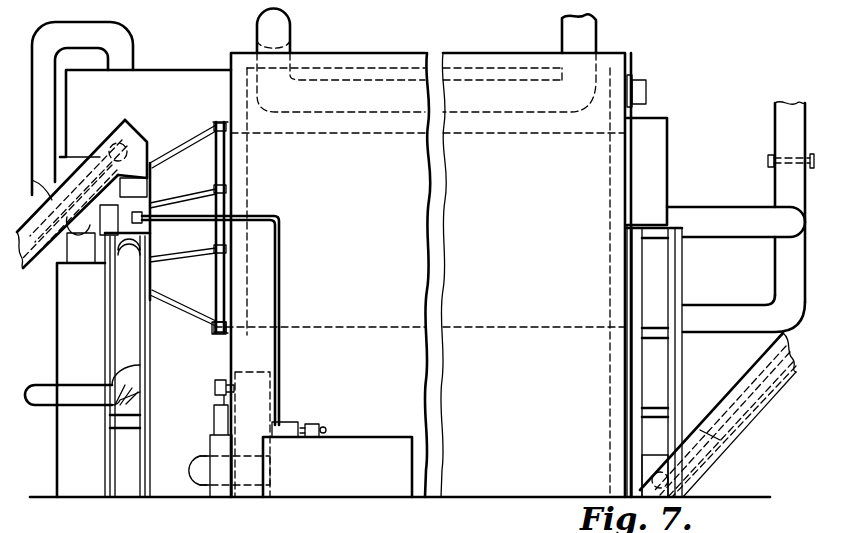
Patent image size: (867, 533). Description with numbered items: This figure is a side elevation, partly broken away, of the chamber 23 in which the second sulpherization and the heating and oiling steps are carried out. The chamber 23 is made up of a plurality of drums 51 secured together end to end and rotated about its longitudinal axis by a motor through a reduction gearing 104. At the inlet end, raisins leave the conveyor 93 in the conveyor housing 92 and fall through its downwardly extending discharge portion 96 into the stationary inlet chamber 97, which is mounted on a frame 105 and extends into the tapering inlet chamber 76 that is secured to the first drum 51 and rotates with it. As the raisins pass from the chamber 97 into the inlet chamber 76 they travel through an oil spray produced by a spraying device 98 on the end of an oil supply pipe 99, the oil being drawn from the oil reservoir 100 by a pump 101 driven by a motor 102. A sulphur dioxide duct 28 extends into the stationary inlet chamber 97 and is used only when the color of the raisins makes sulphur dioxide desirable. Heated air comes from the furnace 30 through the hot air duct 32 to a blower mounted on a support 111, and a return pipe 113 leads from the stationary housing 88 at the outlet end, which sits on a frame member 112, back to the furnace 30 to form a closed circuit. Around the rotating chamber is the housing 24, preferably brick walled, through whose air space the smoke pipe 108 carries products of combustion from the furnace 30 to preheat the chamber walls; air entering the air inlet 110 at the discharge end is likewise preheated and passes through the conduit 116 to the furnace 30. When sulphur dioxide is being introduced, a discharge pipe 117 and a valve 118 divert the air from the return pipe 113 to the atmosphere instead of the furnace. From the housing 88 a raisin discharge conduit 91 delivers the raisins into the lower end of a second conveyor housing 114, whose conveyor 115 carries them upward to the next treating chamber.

The chamber 23 is at (230, 125).
The housing 24 is at (614, 63).
The sulphur dioxide duct 28 is at (122, 326).
The furnace 30 is at (138, 78).
The hot air duct 32 is at (110, 33).
The drums 51 is at (213, 333).
The tapering inlet chamber 76 is at (196, 150).
The stationary housing 88 is at (650, 140).
The raisin discharge conduit 91 is at (662, 386).
The conveyor housing 92 is at (103, 140).
The conveyor 93 is at (128, 142).
The discharge portion 96 is at (134, 172).
The stationary inlet chamber 97 is at (107, 218).
The spraying device 98 is at (131, 224).
The oil supply pipe 99 is at (250, 216).
The oil reservoir 100 is at (333, 450).
The pump 101 is at (286, 430).
The motor 102 is at (315, 424).
The reduction gearing 104 is at (232, 392).
The frame 105 is at (146, 388).
The smoke pipe 108 is at (290, 42).
The air inlet 110 is at (640, 90).
The support 111 is at (72, 440).
The frame member 112 is at (675, 370).
The return pipe 113 is at (682, 212).
The conveyor housing 114 is at (720, 420).
The conveyor 115 is at (739, 368).
The conduit 116 is at (190, 470).
The discharge pipe 117 is at (785, 130).
The valve 118 is at (780, 175).